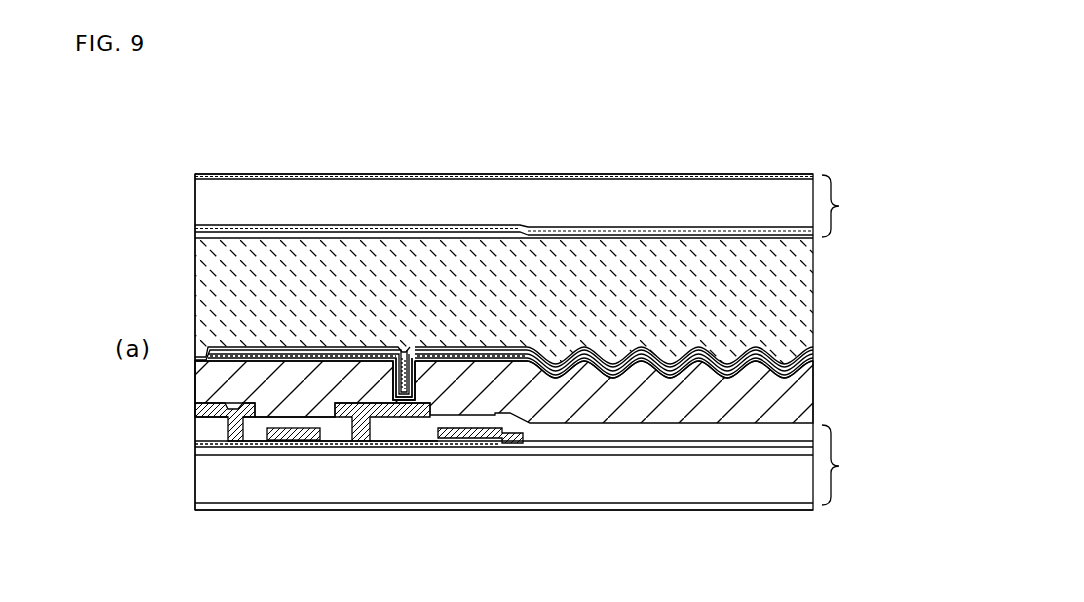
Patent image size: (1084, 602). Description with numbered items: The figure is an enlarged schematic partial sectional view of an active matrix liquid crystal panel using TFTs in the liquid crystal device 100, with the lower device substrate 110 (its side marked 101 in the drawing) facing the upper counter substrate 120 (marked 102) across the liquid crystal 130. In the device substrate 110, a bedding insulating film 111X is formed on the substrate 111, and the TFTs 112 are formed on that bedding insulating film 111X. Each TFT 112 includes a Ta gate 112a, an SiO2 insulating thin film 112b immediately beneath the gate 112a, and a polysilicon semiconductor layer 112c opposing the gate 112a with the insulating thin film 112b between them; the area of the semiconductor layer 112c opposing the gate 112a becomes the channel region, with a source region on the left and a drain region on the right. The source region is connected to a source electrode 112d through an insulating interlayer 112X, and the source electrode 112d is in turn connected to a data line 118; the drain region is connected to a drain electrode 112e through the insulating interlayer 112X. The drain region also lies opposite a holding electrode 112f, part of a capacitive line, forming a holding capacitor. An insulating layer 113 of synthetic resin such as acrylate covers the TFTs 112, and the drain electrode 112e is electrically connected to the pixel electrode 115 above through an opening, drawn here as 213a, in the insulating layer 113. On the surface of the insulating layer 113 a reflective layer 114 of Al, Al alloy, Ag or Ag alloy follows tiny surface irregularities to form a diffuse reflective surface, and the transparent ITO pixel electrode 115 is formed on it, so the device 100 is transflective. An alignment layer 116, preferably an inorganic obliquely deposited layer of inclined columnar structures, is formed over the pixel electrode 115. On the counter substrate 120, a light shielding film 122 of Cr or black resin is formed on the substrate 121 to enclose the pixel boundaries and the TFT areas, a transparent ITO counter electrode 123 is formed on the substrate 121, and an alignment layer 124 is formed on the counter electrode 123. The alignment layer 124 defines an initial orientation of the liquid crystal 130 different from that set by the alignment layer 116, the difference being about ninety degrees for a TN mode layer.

The liquid crystal device 100 is at (495, 136).
The element substrate 101 is at (195, 512).
The sealing substrate 102 is at (803, 162).
The device substrate 110 is at (860, 465).
The substrate 111 is at (635, 503).
The bedding insulating film 111X is at (633, 455).
The TFT 112 is at (240, 462).
The Ta gate 112a is at (288, 441).
The insulating thin film 112b is at (725, 447).
The semiconductor layer 112c is at (448, 441).
The source electrode 112d is at (225, 425).
The drain electrode 112e is at (362, 442).
The holding electrode 112f is at (545, 441).
The insulating interlayer 112X is at (797, 434).
The insulating layer 113 is at (798, 400).
The reflective layer 114 is at (257, 362).
The pixel electrode 115 is at (241, 352).
The alignment layer 116 is at (262, 347).
The data line 118 is at (210, 406).
The counter substrate 120 is at (860, 206).
The substrate 121 is at (628, 174).
The light shielding film 122 is at (345, 228).
The counter electrode 123 is at (717, 228).
The alignment layer 124 is at (247, 232).
The liquid crystal 130 is at (807, 301).
The contact hole 213a is at (402, 347).